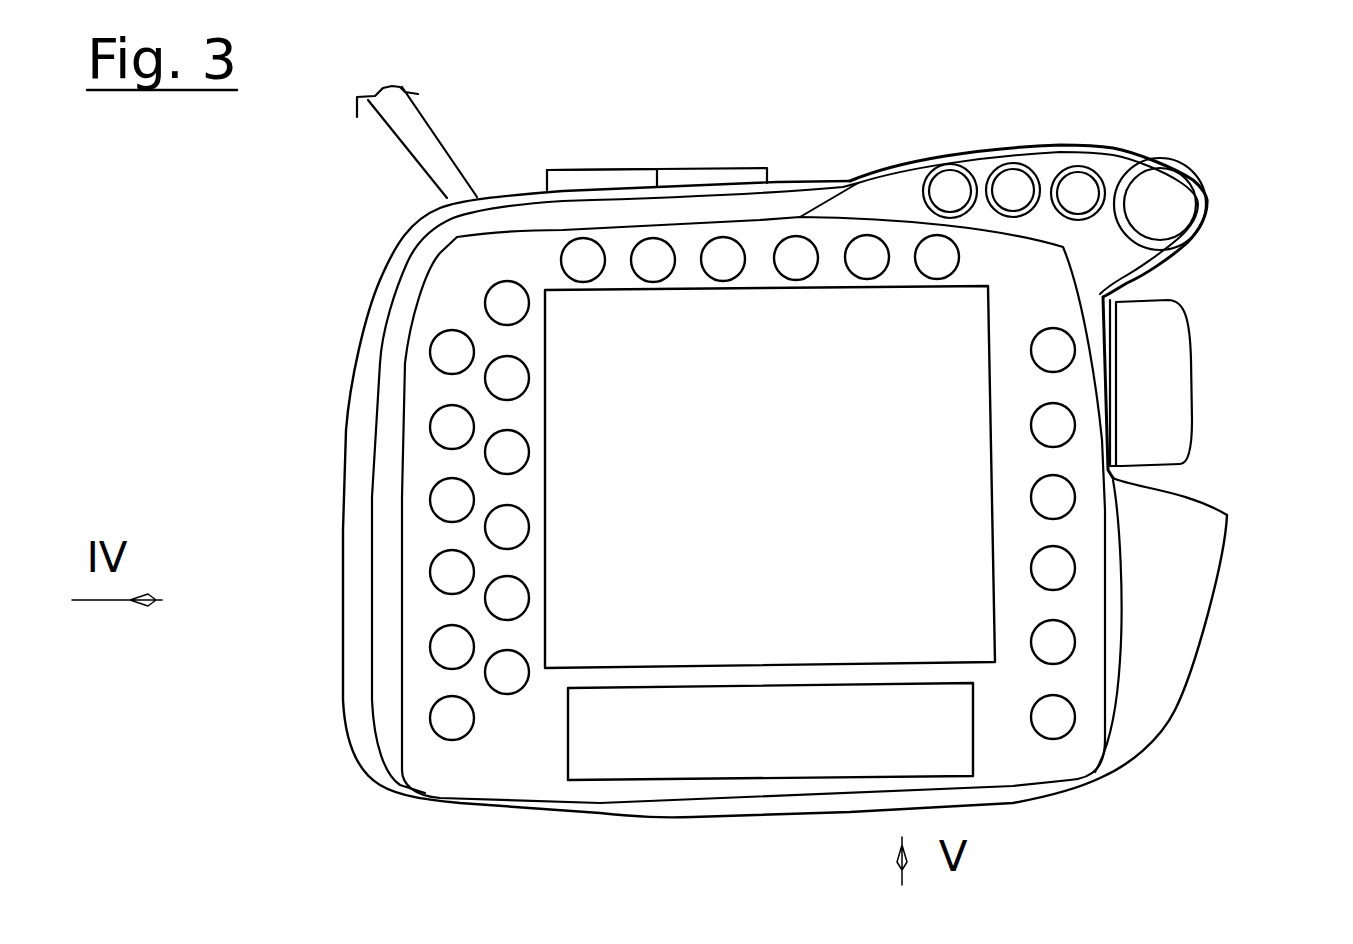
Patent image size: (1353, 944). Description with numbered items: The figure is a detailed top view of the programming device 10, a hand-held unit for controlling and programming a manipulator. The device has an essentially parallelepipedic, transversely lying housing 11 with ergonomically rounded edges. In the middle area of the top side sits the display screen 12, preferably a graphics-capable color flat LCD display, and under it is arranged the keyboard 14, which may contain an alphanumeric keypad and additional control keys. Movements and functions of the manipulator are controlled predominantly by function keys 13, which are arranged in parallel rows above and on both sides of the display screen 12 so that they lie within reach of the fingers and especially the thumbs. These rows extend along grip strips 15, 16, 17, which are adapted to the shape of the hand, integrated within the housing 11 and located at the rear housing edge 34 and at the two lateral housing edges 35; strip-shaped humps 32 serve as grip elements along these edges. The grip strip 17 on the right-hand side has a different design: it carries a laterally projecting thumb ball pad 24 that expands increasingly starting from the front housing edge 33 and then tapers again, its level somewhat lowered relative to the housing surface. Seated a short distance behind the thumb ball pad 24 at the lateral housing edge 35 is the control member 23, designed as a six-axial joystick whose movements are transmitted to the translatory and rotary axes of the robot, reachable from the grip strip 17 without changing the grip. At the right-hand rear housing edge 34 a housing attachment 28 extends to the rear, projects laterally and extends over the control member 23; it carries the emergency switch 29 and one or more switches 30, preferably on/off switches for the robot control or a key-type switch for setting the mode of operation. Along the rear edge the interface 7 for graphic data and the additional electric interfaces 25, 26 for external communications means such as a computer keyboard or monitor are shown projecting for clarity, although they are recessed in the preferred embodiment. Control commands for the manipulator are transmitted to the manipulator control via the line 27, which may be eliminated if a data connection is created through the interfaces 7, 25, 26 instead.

The interface 7 is at (725, 177).
The programming device 10 is at (913, 155).
The housing 11 is at (380, 268).
The display screen 12 is at (770, 477).
The function keys 13 is at (583, 260).
The keyboard 14 is at (770, 731).
The grip strip 15 is at (663, 213).
The grip strip 16 is at (387, 515).
The grip strip 17 is at (1100, 520).
The control member 23 is at (1153, 347).
The thumb ball pad 24 is at (1170, 567).
The electric interface 25 is at (577, 182).
The electric interface 26 is at (602, 124).
The line 27 is at (392, 118).
The housing attachment 28 is at (1058, 162).
The emergency switch 29 is at (1163, 203).
The device switch 30 is at (1010, 183).
The strip-shaped hump 32 is at (560, 436).
The front housing edge 33 is at (678, 845).
The rear housing edge 34 is at (830, 125).
The lateral housing edge 35 is at (300, 369).